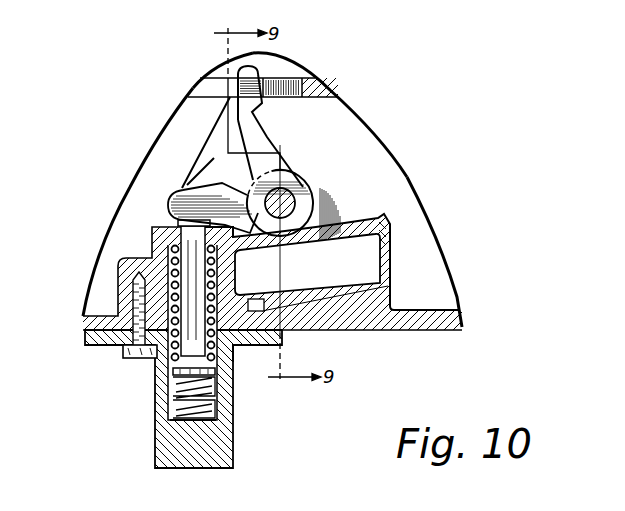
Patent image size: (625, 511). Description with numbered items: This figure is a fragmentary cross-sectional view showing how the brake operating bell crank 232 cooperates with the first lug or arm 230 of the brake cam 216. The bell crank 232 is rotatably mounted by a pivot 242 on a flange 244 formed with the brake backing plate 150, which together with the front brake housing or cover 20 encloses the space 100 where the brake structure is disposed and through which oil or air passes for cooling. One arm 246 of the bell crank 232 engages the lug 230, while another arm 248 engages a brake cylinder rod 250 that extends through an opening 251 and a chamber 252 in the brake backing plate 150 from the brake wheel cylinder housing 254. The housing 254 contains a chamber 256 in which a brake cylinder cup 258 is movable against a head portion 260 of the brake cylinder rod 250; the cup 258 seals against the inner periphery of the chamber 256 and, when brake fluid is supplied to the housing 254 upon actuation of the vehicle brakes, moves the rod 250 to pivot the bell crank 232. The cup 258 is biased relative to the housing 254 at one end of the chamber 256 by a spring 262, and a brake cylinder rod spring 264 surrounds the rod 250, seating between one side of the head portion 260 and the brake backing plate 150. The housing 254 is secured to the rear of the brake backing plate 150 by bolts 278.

The housing 20 is at (417, 197).
The space 100 is at (355, 138).
The brake backing plate 150 is at (448, 310).
The brake cam 216 is at (202, 90).
The first lug or arm 230 is at (292, 85).
The brake operating bell crank 232 is at (268, 137).
The pivot 242 is at (305, 187).
The flange 244 is at (360, 200).
The arm 246 is at (255, 142).
The arm 248 is at (220, 187).
The brake cylinder rod 250 is at (193, 270).
The opening 251 is at (167, 215).
The chamber 252 is at (165, 255).
The brake wheel cylinder housing 254 is at (227, 432).
The chamber 256 is at (173, 408).
The brake cylinder cup 258 is at (173, 392).
The head portion 260 is at (173, 373).
The spring 262 is at (173, 417).
The brake cylinder rod spring 264 is at (232, 352).
The bolts 278 is at (123, 353).